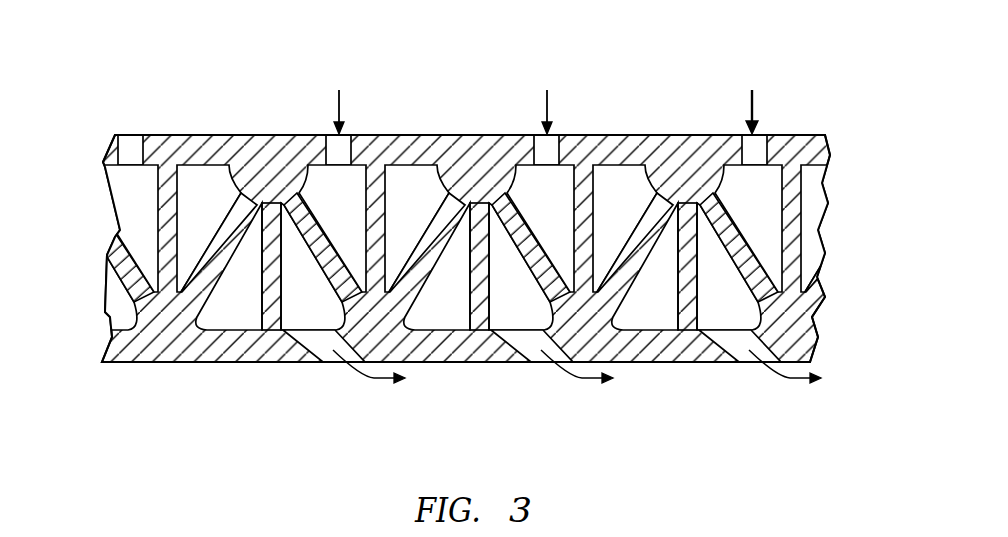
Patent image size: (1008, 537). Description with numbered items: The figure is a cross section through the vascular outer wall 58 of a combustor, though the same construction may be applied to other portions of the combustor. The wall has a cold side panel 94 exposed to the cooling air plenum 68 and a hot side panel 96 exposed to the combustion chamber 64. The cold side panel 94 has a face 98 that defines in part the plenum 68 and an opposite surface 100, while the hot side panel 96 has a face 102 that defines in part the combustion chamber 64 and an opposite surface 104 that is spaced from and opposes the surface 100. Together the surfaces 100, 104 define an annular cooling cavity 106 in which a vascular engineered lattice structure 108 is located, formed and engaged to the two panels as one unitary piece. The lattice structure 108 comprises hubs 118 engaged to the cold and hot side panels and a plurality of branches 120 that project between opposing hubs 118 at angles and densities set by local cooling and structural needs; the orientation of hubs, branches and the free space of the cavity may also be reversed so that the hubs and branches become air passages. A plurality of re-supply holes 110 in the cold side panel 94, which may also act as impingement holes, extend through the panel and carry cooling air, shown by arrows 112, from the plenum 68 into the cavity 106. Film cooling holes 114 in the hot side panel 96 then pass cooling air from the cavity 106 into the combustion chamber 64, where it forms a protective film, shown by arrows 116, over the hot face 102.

The vascular outer wall 58 is at (711, 67).
The combustion chamber 64 is at (257, 440).
The cooling air plenum 68 is at (212, 98).
The cold side panel 94 is at (414, 127).
The hot side panel 96 is at (442, 374).
The face 98 is at (660, 135).
The surface 100 is at (413, 166).
The face 102 is at (653, 365).
The surface 104 is at (650, 318).
The annular cooling cavity 106 is at (457, 320).
The lattice structure 108 is at (205, 231).
The holes 110 is at (560, 134).
The arrows 112 is at (336, 101).
The film cooling holes 114 is at (512, 330).
The arrows 116 is at (359, 386).
The hubs 118 is at (343, 318).
The branches 120 is at (334, 232).